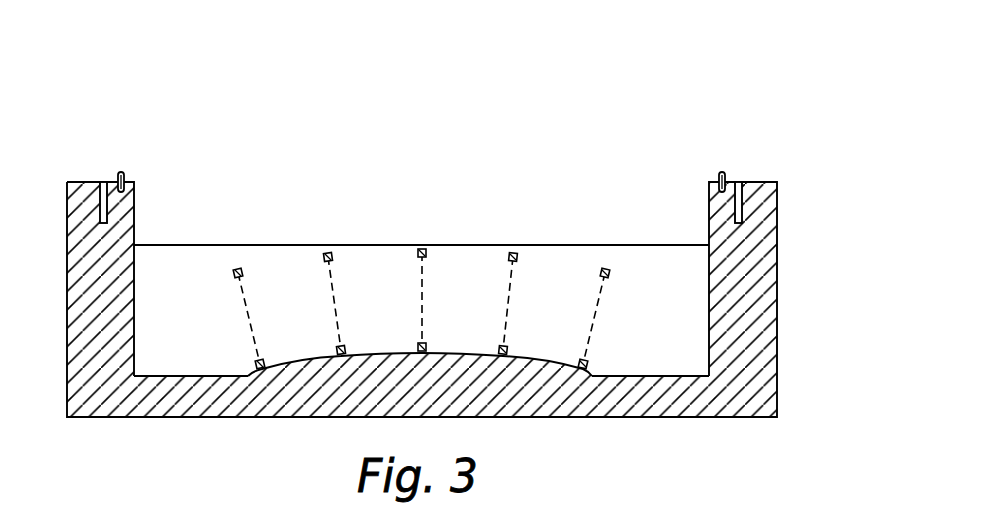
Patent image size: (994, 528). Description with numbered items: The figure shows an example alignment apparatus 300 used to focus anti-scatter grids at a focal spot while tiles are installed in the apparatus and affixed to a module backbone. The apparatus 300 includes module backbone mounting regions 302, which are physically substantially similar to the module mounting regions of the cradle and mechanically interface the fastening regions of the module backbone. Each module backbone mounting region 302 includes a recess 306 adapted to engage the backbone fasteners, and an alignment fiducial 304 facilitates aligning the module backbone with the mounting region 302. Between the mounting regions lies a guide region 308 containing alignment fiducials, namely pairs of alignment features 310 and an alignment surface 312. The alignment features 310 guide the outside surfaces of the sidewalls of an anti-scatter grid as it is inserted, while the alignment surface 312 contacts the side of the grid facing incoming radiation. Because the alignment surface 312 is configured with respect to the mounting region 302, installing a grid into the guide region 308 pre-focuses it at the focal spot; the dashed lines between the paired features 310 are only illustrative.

The alignment apparatus 300 is at (413, 137).
The module backbone mounting region 302 is at (84, 170).
The alignment fiducial 304 is at (124, 175).
The recess 306 is at (101, 206).
The guide region 308 is at (277, 233).
The alignment feature 310 is at (253, 367).
The alignment surface 312 is at (300, 366).